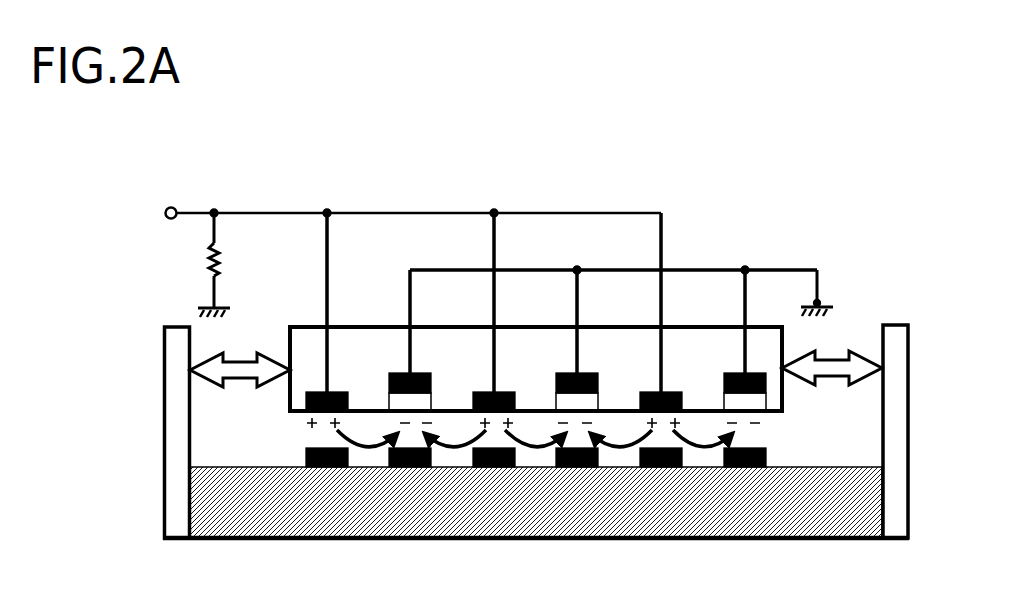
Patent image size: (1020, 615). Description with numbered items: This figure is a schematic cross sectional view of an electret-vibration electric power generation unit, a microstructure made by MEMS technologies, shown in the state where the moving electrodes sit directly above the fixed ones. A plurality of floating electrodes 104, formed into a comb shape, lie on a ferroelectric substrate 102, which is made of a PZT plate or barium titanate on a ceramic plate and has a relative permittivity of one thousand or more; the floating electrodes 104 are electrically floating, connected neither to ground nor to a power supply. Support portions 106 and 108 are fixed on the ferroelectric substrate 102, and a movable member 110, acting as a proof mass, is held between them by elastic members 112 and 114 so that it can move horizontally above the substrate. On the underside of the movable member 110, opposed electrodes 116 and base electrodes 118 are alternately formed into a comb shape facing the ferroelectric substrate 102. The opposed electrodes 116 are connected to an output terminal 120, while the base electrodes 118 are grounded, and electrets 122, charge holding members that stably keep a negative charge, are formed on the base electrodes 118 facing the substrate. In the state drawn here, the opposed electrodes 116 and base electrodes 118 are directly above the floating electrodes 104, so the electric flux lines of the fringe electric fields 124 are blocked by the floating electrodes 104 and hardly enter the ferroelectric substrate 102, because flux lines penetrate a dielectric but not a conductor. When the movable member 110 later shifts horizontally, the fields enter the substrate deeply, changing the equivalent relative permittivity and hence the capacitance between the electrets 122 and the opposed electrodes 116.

The ferroelectric substrate 102 is at (310, 540).
The floating electrodes 104 is at (307, 447).
The support portion 106 is at (178, 323).
The support portion 108 is at (897, 325).
The movable member 110 is at (343, 325).
The elastic member 112 is at (191, 393).
The elastic member 114 is at (795, 358).
The opposed electrodes 116 is at (240, 360).
The base electrodes 118 is at (267, 335).
The output terminal 120 is at (175, 208).
The electrets 122 is at (762, 413).
The fringe electric fields 124 is at (525, 445).